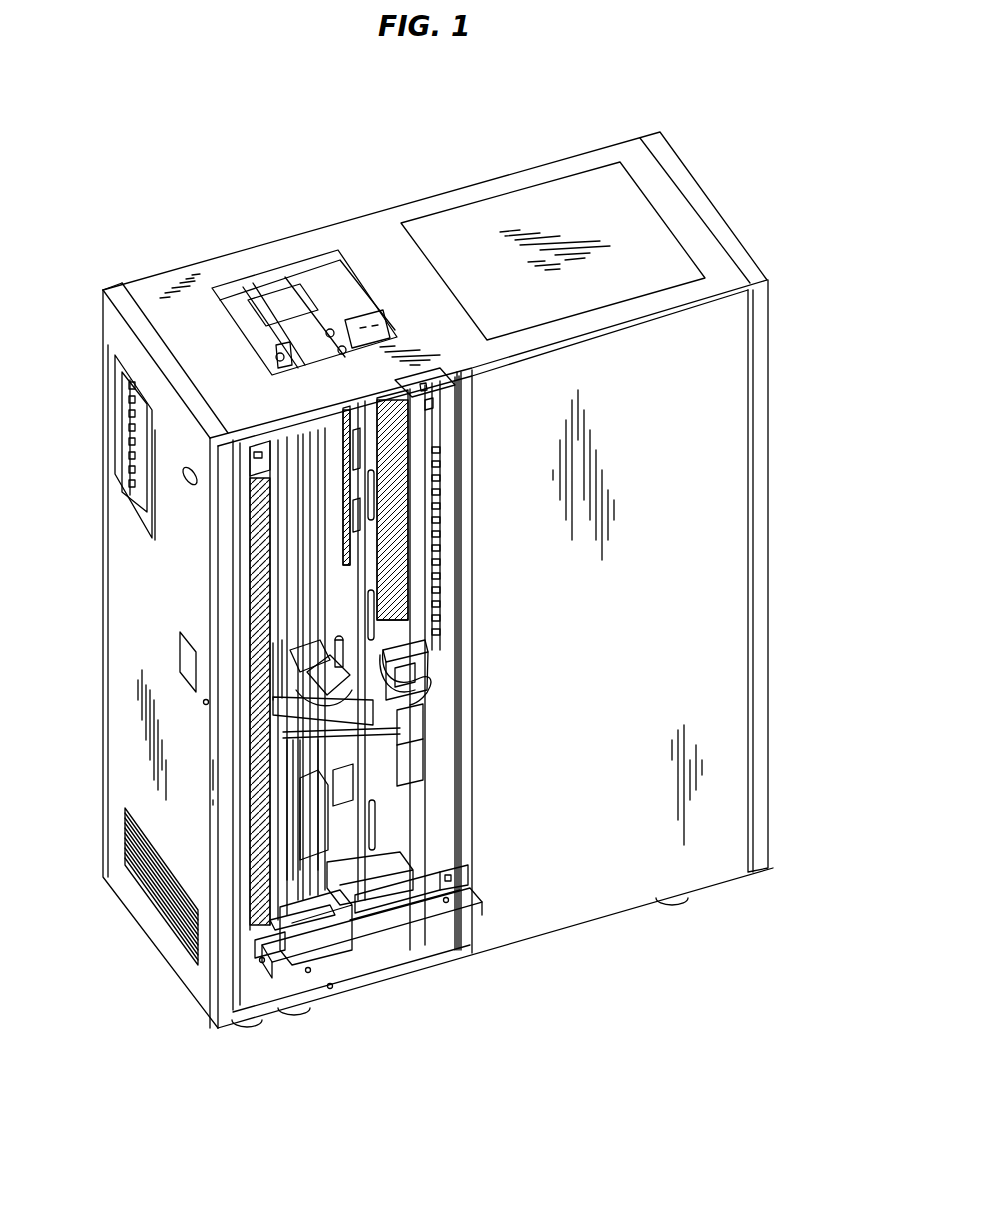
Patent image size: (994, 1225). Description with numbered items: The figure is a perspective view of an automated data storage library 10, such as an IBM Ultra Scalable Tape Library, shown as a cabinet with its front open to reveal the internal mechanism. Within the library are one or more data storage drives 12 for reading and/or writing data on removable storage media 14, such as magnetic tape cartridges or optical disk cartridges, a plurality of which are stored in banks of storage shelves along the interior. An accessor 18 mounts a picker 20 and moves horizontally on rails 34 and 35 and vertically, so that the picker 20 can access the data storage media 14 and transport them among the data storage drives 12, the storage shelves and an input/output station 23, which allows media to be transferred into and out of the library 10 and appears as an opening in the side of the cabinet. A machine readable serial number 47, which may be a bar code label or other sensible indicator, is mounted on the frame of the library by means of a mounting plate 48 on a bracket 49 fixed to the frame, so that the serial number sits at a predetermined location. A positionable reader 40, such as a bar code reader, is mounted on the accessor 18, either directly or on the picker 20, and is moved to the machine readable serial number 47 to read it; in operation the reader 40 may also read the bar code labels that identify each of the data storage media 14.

The automated data storage library 10 is at (708, 112).
The data storage drives 12 is at (408, 708).
The removable storage media 14 is at (255, 546).
The accessor 18 is at (297, 917).
The picker 20 is at (367, 727).
The input/output station 23 is at (140, 411).
The rail 34 is at (270, 287).
The rail 35 is at (387, 957).
The positionable reader 40 is at (330, 665).
The machine readable serial number 47 is at (402, 700).
The mounting plate 48 is at (436, 652).
The bracket 49 is at (415, 672).